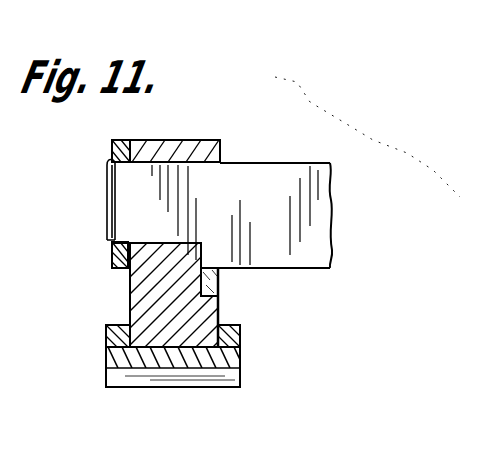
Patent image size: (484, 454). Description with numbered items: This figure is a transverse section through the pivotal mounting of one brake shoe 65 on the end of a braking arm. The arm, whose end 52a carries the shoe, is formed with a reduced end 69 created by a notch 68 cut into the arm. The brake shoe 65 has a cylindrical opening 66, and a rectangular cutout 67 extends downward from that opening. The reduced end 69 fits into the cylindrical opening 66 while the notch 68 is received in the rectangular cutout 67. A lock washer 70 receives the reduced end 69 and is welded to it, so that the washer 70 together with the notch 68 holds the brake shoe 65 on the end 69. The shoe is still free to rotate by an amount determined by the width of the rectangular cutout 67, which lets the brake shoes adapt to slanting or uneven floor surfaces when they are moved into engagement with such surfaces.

The end of arm 52a is at (292, 173).
The brake shoe 65 is at (226, 146).
The cylindrical opening 66 is at (194, 170).
The rectangular cutout 67 is at (209, 288).
The notch 68 is at (215, 285).
The reduced end 69 is at (138, 212).
The lock washer 70 is at (112, 254).